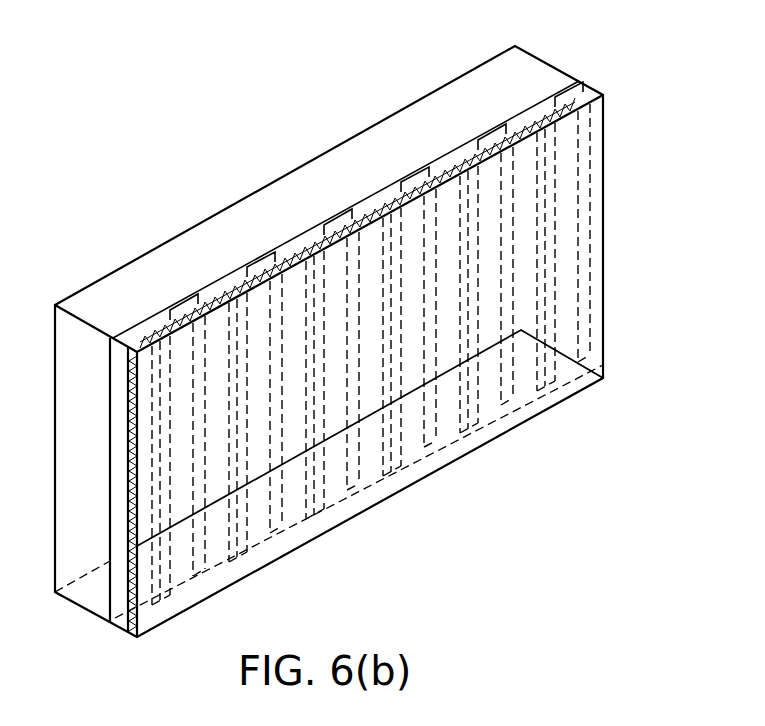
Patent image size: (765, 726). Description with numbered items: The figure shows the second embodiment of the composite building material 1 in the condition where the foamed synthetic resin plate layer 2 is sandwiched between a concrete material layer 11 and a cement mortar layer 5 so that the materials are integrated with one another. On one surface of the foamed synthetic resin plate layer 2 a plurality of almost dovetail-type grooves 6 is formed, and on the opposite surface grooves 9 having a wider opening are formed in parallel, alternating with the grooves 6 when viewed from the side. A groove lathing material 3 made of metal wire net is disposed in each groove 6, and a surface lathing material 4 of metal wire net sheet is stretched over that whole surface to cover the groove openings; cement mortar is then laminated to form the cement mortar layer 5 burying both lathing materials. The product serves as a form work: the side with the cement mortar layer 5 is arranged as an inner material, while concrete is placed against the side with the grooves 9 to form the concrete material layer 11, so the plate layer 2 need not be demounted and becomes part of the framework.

The composite building material 1 is at (170, 128).
The foamed synthetic resin plate layer 2 is at (585, 86).
The groove lathing material 3 is at (470, 150).
The surface lathing material 4 is at (527, 135).
The cement mortar layer 5 is at (582, 253).
The concave groove 6 is at (555, 108).
The groove 9 is at (187, 298).
The concrete material layer 11 is at (252, 222).